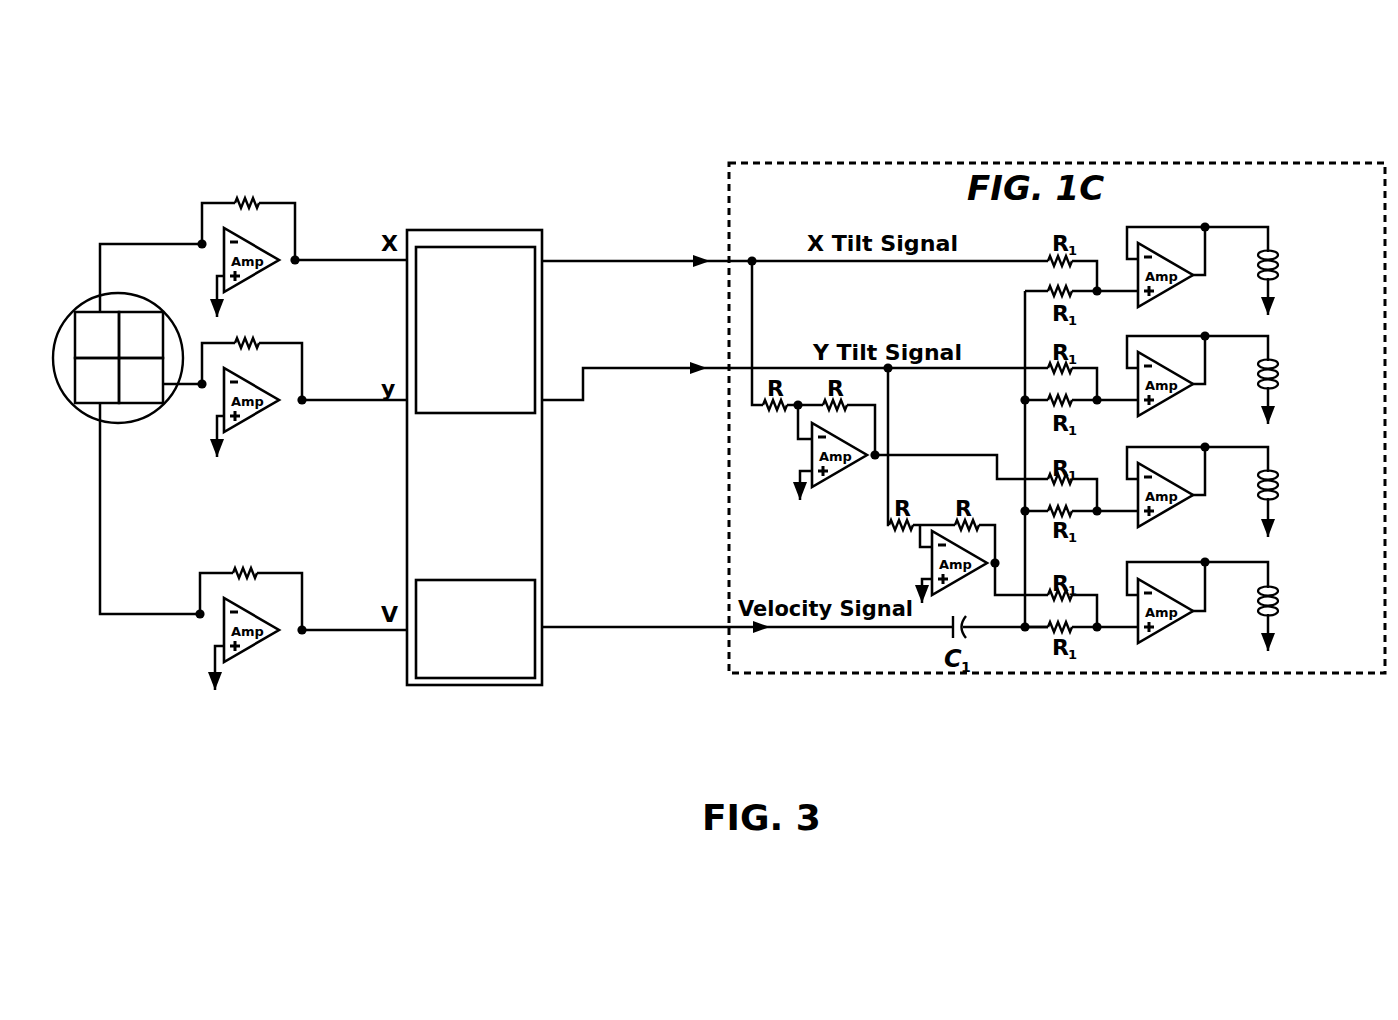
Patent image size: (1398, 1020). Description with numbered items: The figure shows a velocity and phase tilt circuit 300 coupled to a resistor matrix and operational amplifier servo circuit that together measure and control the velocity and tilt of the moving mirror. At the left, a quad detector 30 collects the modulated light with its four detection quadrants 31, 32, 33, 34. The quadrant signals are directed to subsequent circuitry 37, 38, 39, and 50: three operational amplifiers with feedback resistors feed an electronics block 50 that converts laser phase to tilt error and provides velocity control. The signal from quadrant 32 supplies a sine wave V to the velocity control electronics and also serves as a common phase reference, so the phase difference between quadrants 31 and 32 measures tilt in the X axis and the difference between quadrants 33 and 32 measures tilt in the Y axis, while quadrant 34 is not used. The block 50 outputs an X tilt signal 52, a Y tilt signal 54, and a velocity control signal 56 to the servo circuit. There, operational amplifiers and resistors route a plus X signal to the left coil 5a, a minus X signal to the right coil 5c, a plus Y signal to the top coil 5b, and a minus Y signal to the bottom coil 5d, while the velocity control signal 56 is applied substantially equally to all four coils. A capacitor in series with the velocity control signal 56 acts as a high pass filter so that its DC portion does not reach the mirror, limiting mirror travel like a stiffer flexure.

In FIG. 3, the velocity and phase tilt circuit 300 is at (236, 86).
In FIG. 3, the quad detector 30 is at (121, 424).
In FIG. 3, the detection quadrant 31 is at (97, 335).
In FIG. 3, the detection quadrant 32 is at (97, 380).
In FIG. 3, the detection quadrant 33 is at (141, 380).
In FIG. 3, the detection quadrant 34 is at (141, 335).
In FIG. 3, the amplifier circuitry 37 is at (250, 284).
In FIG. 3, the amplifier circuitry 38 is at (248, 423).
In FIG. 3, the amplifier circuitry 39 is at (248, 653).
In FIG. 3, the conversion and velocity control electronics 50 is at (477, 230).
In FIG. 3, the X tilt signal 52 is at (587, 263).
In FIG. 3, the Y tilt signal 54 is at (597, 372).
In FIG. 3, the velocity control signal 56 is at (612, 628).
In FIG. 1C, the left coil 5a is at (1256, 264).
In FIG. 1C, the top coil 5b is at (1258, 382).
In FIG. 1C, the right coil 5c is at (1255, 496).
In FIG. 1C, the bottom coil 5d is at (1255, 611).